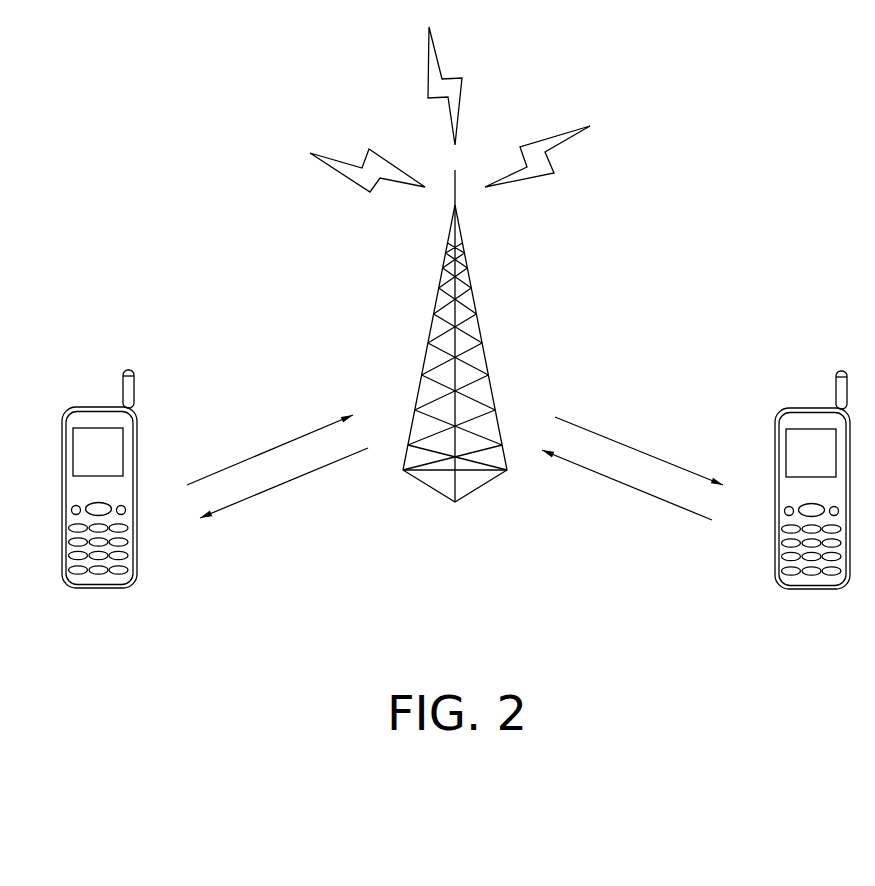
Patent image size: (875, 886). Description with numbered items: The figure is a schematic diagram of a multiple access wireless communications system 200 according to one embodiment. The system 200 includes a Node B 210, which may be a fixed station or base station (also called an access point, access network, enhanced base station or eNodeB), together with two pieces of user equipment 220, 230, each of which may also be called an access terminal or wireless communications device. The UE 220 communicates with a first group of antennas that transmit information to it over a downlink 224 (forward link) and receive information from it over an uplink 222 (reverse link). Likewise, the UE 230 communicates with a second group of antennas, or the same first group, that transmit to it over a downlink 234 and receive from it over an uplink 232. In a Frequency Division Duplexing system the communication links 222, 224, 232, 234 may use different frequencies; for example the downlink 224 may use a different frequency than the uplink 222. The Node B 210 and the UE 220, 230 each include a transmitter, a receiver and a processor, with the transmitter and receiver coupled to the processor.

The multiple access wireless communications system 200 is at (740, 118).
The Node B 210 is at (480, 327).
The user equipment 220 is at (98, 407).
The user equipment 230 is at (812, 408).
The uplink 222 is at (268, 448).
The downlink 224 is at (283, 484).
The uplink 232 is at (627, 485).
The downlink 234 is at (640, 450).